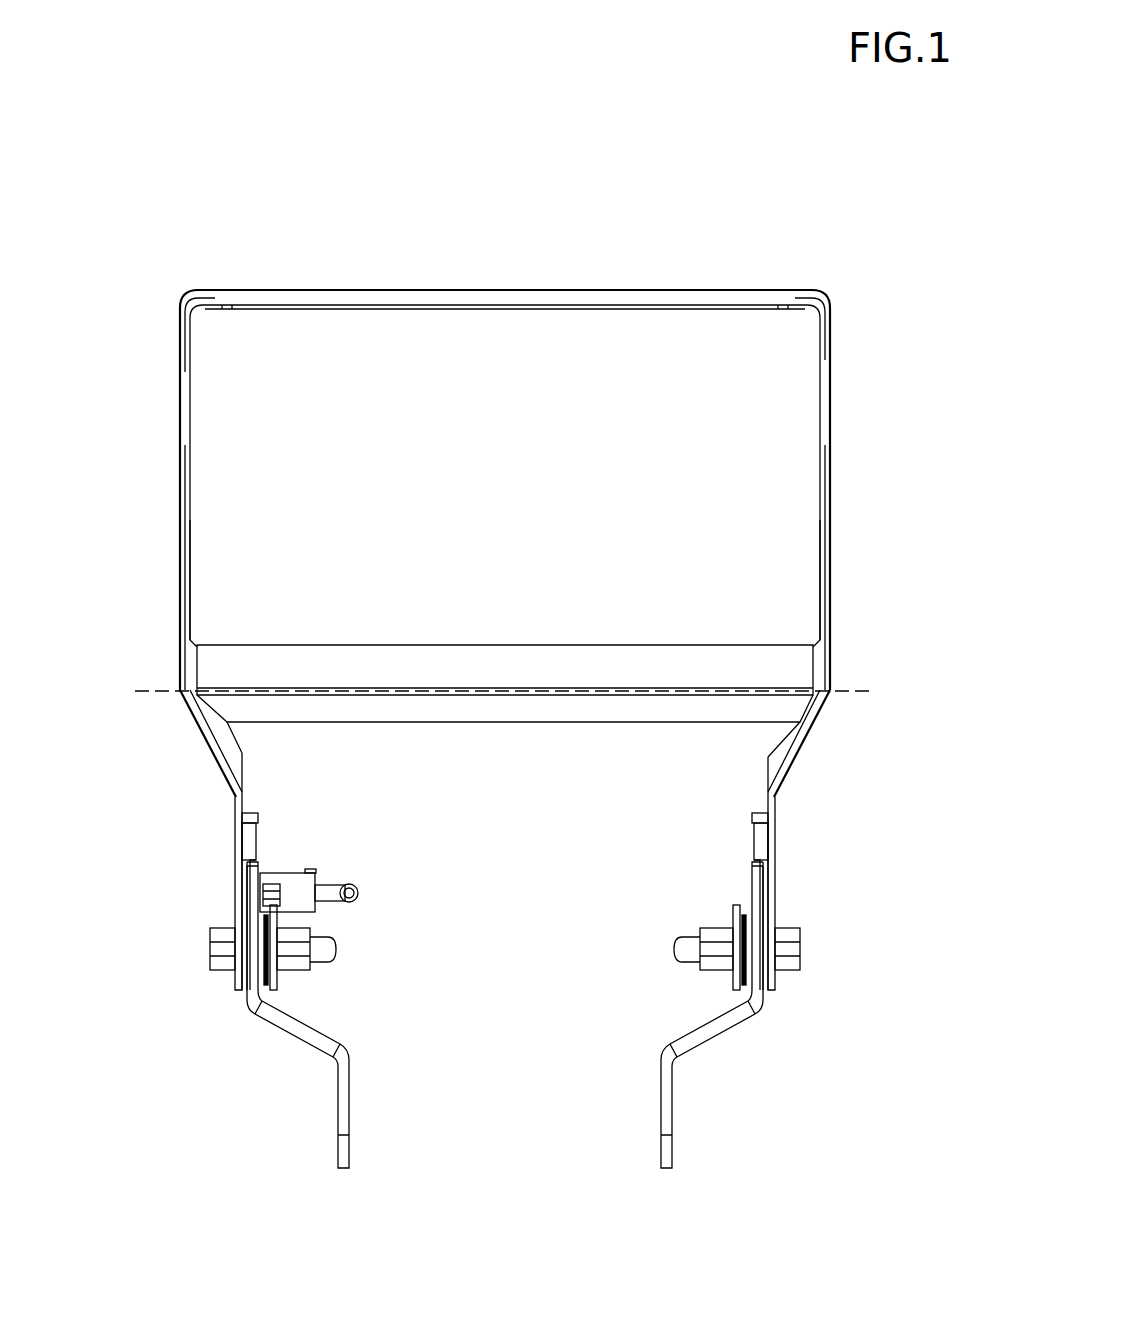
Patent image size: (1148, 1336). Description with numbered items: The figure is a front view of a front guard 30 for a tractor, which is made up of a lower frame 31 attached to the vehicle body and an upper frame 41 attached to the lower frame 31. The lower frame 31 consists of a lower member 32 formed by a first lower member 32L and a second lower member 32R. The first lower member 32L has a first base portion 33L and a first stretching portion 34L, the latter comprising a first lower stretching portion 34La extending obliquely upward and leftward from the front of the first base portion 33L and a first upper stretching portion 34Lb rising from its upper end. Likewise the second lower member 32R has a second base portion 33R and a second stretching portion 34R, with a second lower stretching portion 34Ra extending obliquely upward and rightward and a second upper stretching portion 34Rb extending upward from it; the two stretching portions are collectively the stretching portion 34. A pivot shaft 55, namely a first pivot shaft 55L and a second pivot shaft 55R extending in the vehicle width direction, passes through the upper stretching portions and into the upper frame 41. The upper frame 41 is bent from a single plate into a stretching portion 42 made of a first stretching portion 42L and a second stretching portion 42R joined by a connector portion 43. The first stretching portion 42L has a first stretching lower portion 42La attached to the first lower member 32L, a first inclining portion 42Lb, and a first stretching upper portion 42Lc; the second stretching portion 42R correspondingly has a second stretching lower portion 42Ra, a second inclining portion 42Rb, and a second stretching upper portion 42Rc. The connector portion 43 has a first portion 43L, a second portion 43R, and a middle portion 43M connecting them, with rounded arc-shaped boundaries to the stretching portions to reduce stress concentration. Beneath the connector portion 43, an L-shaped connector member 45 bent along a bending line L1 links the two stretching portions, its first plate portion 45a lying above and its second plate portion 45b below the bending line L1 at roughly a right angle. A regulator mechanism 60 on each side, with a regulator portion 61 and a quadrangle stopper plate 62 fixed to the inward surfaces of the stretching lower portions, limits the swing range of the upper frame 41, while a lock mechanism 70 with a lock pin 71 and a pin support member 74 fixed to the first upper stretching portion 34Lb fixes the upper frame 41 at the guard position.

The front guard 30 is at (531, 172).
The upper frame 41 is at (607, 252).
The connector portion 43 is at (401, 284).
The second portion 43R is at (213, 290).
The middle portion 43M is at (478, 290).
The first portion 43L is at (803, 290).
The stretching portion 42 is at (507, 649).
The second stretching portion 42R is at (175, 420).
The first stretching portion 42L is at (835, 420).
The second stretching upper portion 42Rc is at (179, 577).
The first stretching upper portion 42Lc is at (831, 577).
The second inclining portion 42Rb is at (213, 756).
The first inclining portion 42Lb is at (808, 738).
The second stretching lower portion 42Ra is at (235, 840).
The first stretching lower portion 42La is at (775, 840).
The connector member 45 is at (401, 640).
The first plate portion 45a is at (605, 665).
The second plate portion 45b is at (550, 722).
The bending line L1 is at (500, 691).
The regulator mechanism 60 is at (278, 804).
The regulator portion 61 is at (246, 812).
The stopper plate 62 is at (258, 836).
The lock mechanism 70 is at (337, 868).
The lock pin 71 is at (360, 893).
The pin support member 74 is at (303, 905).
The pivot shaft 55 is at (510, 928).
The second pivot shaft 55R is at (210, 948).
The first pivot shaft 55L is at (870, 921).
The lower frame 31 is at (685, 1195).
The lower member 32 is at (489, 1051).
The second lower member 32R is at (362, 1136).
The first lower member 32L is at (645, 1134).
The stretching portion 34 is at (489, 1051).
The second stretching portion 34R is at (322, 1037).
The first stretching portion 34L is at (688, 1030).
The second upper stretching portion 34Rb is at (240, 978).
The first upper stretching portion 34Lb is at (760, 988).
The second lower stretching portion 34Ra is at (300, 1030).
The first lower stretching portion 34La is at (710, 1030).
The second base portion 33R is at (338, 1140).
The first base portion 33L is at (672, 1138).